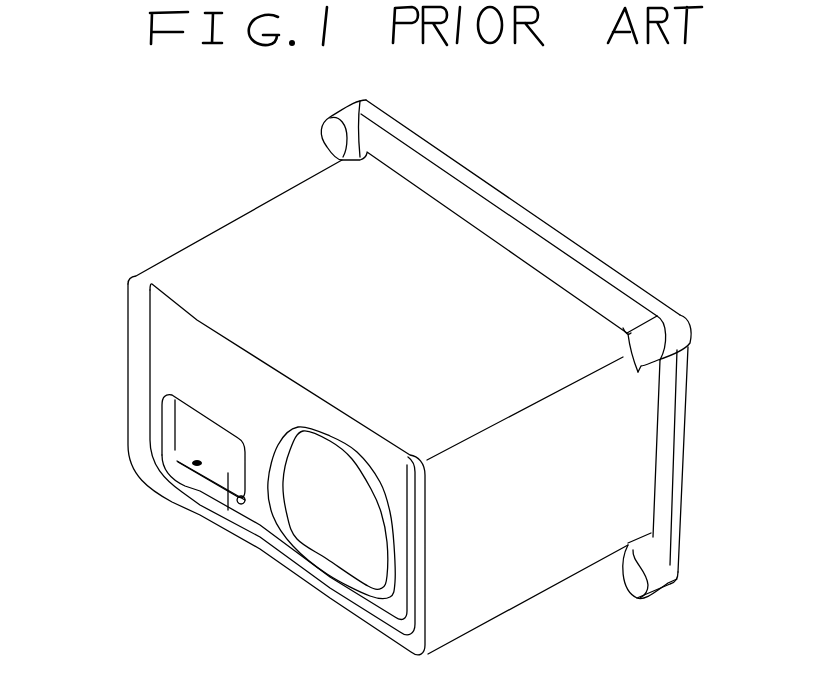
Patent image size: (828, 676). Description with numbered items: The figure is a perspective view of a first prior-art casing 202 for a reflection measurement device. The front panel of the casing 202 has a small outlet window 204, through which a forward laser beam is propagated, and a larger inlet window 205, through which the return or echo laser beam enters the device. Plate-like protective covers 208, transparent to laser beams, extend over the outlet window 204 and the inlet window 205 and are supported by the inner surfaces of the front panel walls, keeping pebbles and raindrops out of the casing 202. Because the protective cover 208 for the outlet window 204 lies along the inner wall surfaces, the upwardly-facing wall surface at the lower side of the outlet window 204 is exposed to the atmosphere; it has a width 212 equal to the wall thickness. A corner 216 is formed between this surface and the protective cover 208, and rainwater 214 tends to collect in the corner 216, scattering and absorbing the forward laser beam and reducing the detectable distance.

The casing 202 is at (268, 228).
The outlet window 204 is at (182, 397).
The inlet window 205 is at (281, 421).
The protective cover 208 is at (326, 522).
The width 212 is at (208, 470).
The rainwater 214 is at (178, 474).
The corner 216 is at (240, 505).